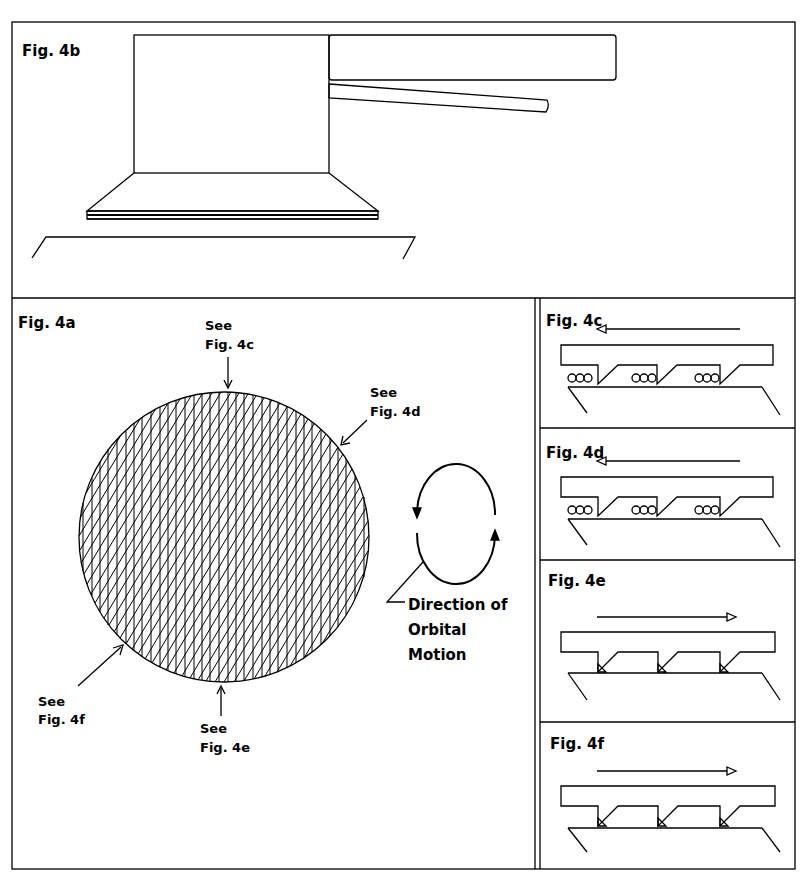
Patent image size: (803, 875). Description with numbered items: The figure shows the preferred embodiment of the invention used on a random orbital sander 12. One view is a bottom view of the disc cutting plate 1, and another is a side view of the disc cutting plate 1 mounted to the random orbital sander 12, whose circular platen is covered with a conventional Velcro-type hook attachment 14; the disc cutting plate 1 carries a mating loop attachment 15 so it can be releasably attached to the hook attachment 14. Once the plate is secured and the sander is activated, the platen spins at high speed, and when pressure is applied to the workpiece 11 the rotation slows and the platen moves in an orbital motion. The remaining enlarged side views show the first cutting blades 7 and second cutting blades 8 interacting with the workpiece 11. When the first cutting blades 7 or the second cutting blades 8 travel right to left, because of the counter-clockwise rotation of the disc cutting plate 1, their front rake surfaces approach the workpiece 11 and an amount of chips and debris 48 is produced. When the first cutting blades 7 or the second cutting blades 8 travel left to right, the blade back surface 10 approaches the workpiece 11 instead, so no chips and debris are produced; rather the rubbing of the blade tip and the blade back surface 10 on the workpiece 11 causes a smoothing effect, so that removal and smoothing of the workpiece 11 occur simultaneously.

In FIG. 4B, the disc cutting plate 1 is at (362, 214).
In FIG. 4C, the disc cutting plate 1 is at (621, 353).
In FIG. 4D, the disc cutting plate 1 is at (623, 488).
In FIG. 4E, the disc cutting plate 1 is at (629, 643).
In FIG. 4F, the disc cutting plate 1 is at (629, 797).
In FIG. 4C, the first cutting blades 7 is at (663, 373).
In FIG. 4E, the first cutting blades 7 is at (600, 665).
In FIG. 4D, the second cutting blades 8 is at (664, 503).
In FIG. 4F, the second cutting blades 8 is at (602, 822).
In FIG. 4E, the blade back surface 10 is at (667, 665).
In FIG. 4F, the blade back surface 10 is at (667, 820).
In FIG. 4B, the workpiece 11 is at (403, 237).
In FIG. 4C, the workpiece 11 is at (727, 388).
In FIG. 4D, the workpiece 11 is at (732, 520).
In FIG. 4E, the workpiece 11 is at (738, 675).
In FIG. 4F, the workpiece 11 is at (738, 830).
In FIG. 4B, the random orbital sander 12 is at (329, 141).
In FIG. 4B, the hook attachment 14 is at (360, 211).
In FIG. 4B, the loop attachment 15 is at (370, 212).
In FIG. 4C, the chips & debris 48 is at (708, 380).
In FIG. 4D, the chips & debris 48 is at (708, 512).